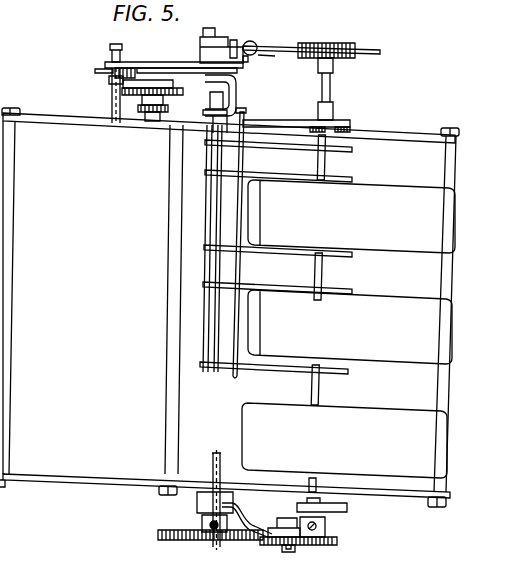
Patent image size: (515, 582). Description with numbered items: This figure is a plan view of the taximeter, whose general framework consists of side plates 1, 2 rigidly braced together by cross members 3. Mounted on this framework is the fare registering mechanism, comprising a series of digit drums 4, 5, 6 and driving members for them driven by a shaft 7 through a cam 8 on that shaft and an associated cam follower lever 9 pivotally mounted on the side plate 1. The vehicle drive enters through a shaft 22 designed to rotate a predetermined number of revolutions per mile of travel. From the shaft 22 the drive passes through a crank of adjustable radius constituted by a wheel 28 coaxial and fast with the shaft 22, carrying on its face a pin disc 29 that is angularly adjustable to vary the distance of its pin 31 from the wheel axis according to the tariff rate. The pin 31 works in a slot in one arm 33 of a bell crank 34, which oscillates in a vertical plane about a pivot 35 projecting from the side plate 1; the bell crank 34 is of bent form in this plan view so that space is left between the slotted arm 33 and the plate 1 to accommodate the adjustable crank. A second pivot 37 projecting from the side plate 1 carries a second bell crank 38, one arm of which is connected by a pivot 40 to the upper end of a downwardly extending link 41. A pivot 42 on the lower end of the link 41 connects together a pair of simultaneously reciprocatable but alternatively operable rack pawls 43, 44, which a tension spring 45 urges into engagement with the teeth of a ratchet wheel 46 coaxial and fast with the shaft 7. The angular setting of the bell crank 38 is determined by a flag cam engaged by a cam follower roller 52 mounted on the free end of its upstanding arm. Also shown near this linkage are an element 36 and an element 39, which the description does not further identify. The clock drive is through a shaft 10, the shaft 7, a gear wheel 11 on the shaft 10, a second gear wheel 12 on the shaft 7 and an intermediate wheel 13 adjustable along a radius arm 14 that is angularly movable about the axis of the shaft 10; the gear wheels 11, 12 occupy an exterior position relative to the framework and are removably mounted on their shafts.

The side plate 1 is at (32, 117).
The side plate 2 is at (22, 478).
The cross members 3 is at (455, 388).
The digit drum 4 is at (445, 214).
The digit drum 5 is at (443, 328).
The digit drum 6 is at (435, 447).
The shaft 7 is at (325, 383).
The cam 8 is at (340, 108).
The cam follower lever 9 is at (280, 121).
The shaft 10 is at (212, 468).
The gear wheel 11 is at (178, 536).
The second gear wheel 12 is at (319, 542).
The intermediate wheel 13 is at (262, 545).
The radius arm 14 is at (247, 518).
The shaft 22 is at (110, 130).
The wheel 28 is at (173, 95).
The pin disc 29 is at (174, 83).
The pin 31 is at (124, 68).
The arm 33 is at (113, 71).
The bell crank 34 is at (236, 85).
The pivot 35 is at (214, 105).
The rod 36 is at (207, 122).
The second pivot 37 is at (110, 108).
The second bell crank 38 is at (110, 56).
The plate 39 is at (157, 62).
The pivot 40 is at (233, 40).
The link 41 is at (246, 60).
The pivot 42 is at (200, 52).
The rack pawl 43 is at (266, 53).
The rack pawl 44 is at (272, 44).
The tension spring 45 is at (256, 39).
The ratchet wheel 46 is at (332, 45).
The cam follower roller 52 is at (110, 84).